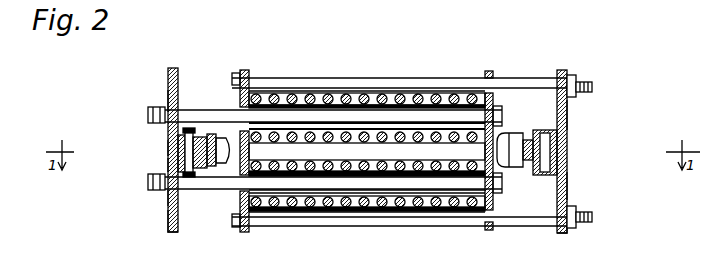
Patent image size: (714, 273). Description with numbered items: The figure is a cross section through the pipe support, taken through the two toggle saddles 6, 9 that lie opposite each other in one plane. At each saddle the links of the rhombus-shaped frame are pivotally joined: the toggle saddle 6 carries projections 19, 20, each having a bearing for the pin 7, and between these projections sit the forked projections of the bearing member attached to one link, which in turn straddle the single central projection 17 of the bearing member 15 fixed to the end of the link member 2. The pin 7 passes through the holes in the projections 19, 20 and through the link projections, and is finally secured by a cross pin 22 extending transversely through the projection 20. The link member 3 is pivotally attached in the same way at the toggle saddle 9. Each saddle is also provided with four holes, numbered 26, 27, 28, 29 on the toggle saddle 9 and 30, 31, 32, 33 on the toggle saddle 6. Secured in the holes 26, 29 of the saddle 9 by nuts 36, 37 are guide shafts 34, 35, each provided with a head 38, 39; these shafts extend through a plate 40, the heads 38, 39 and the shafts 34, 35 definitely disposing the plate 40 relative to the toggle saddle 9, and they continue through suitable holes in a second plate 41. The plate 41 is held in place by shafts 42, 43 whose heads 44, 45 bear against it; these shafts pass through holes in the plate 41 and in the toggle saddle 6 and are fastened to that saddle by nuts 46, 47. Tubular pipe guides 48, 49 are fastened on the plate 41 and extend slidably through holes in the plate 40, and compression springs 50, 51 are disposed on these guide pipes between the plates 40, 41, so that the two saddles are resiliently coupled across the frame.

The link member 2 is at (223, 165).
The link member 3 is at (511, 138).
The toggle saddle 6 is at (166, 147).
The pin 7 is at (166, 163).
The toggle saddle 9 is at (568, 150).
The bearing member 15 is at (214, 133).
The central projection 17 is at (167, 143).
The projection 19 is at (201, 170).
The projection 20 is at (193, 130).
The cross pin 22 is at (188, 128).
The hole 26 is at (546, 87).
The hole 27 is at (568, 118).
The hole 28 is at (568, 186).
The hole 29 is at (557, 226).
The hole 30 is at (170, 78).
The hole 31 is at (166, 100).
The hole 32 is at (167, 200).
The hole 33 is at (171, 220).
The guide shaft 34 is at (365, 85).
The guide shaft 35 is at (397, 218).
The nut 36 is at (578, 78).
The nut 37 is at (577, 227).
The head 38 is at (242, 72).
The head 39 is at (238, 227).
The plate 40 is at (251, 77).
The plate 41 is at (491, 72).
The shaft 42 is at (312, 118).
The shaft 43 is at (345, 196).
The head 44 is at (497, 105).
The head 45 is at (503, 190).
The nut 46 is at (150, 113).
The nut 47 is at (166, 192).
The tubular pipe guide 48 is at (397, 96).
The tubular pipe guide 49 is at (440, 201).
The compression spring 50 is at (307, 95).
The compression spring 51 is at (306, 208).